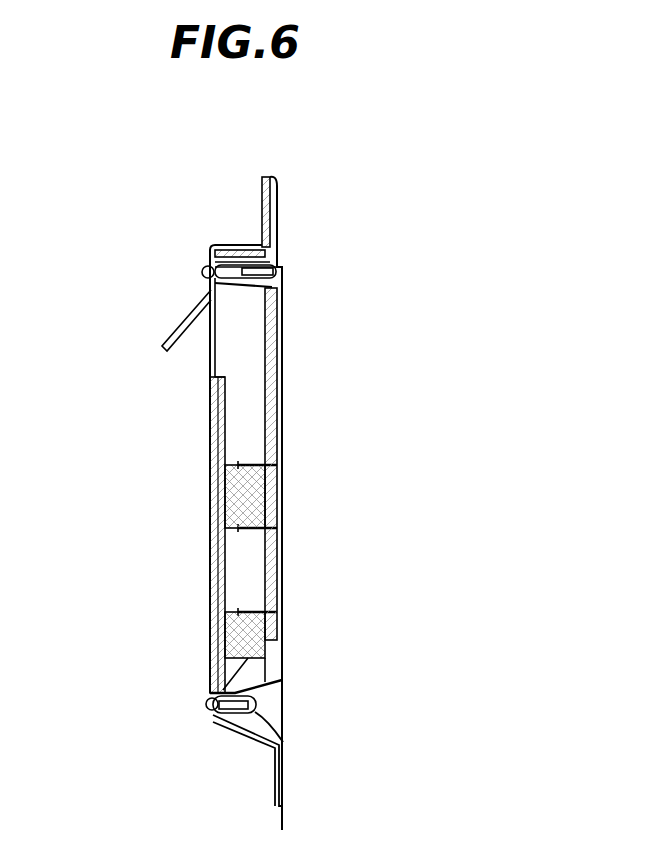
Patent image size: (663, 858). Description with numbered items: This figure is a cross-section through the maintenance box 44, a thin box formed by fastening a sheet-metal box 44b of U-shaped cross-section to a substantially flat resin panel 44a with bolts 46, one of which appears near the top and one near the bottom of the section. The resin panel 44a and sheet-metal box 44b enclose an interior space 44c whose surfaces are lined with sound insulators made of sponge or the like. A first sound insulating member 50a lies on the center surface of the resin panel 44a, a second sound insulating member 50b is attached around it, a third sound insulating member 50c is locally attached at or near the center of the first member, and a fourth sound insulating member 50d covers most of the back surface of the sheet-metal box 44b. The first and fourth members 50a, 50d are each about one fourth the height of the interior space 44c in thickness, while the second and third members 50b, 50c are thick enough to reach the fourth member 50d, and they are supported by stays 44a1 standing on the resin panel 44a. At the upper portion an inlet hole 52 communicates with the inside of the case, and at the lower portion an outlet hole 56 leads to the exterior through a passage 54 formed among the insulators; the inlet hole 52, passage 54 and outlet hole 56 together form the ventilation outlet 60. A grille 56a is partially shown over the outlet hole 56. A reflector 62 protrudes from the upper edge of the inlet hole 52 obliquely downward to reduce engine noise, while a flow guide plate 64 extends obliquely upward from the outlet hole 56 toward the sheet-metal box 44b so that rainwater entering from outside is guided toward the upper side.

The maintenance box 44 is at (260, 479).
The resin panel 44a is at (263, 180).
The stays 44a1 is at (255, 610).
The sheet-metal box 44b is at (228, 248).
The interior space 44c is at (243, 325).
The bolts 46 is at (203, 269).
The first sound insulating member 50a is at (272, 360).
The second sound insulating member 50b is at (253, 643).
The third sound insulating member 50c is at (250, 505).
The fourth sound insulating member 50d is at (222, 457).
The inlet hole 52 is at (227, 343).
The passage 54 is at (243, 393).
The outlet hole 56 is at (272, 710).
The grille 56a is at (285, 660).
The ventilation outlet 60 is at (234, 516).
The reflector 62 is at (183, 316).
The flow guide plate 64 is at (253, 740).